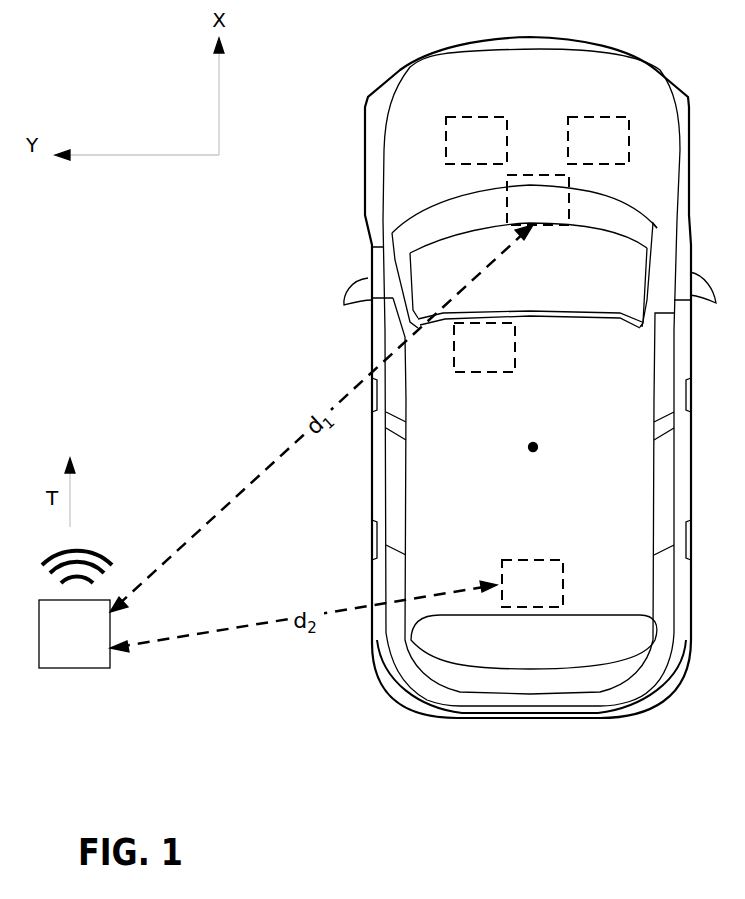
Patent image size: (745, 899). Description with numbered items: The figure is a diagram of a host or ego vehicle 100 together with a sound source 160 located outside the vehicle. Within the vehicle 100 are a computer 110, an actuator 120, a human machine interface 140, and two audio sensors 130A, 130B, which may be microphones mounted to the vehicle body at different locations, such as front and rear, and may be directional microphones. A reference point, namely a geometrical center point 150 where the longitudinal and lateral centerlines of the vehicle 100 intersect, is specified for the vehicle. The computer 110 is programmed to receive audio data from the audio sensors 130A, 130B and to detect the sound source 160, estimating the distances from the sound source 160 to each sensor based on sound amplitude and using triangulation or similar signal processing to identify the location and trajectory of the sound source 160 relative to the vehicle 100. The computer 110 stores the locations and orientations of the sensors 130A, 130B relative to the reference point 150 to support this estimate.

The vehicle 100 is at (530, 377).
The computer 110 is at (476, 140).
The actuator 120 is at (598, 140).
The audio sensor 130A is at (538, 200).
The audio sensor 130B is at (532, 583).
The human machine interface 140 is at (484, 347).
The geometrical center point 150 is at (540, 439).
The sound source 160 is at (75, 609).